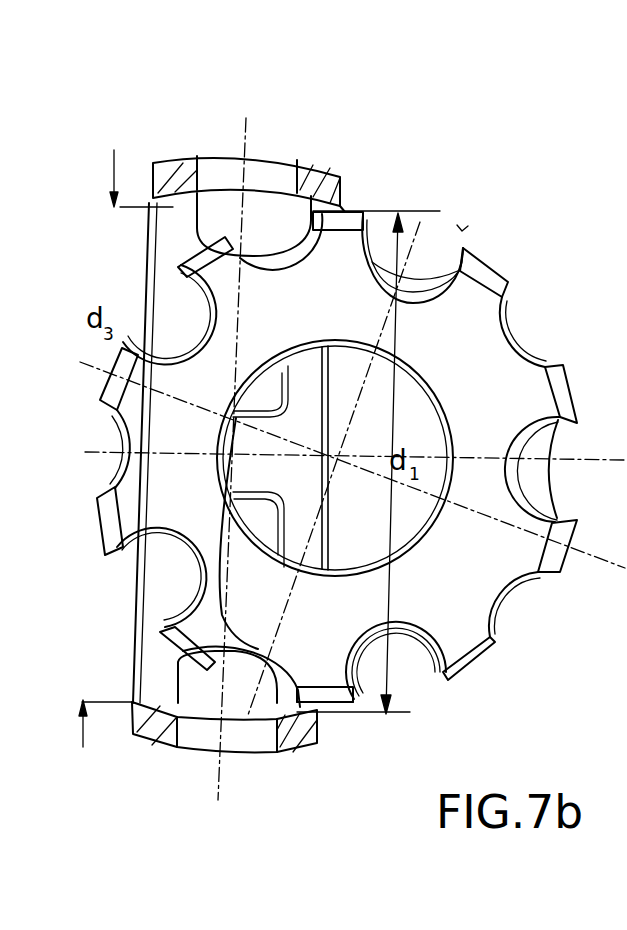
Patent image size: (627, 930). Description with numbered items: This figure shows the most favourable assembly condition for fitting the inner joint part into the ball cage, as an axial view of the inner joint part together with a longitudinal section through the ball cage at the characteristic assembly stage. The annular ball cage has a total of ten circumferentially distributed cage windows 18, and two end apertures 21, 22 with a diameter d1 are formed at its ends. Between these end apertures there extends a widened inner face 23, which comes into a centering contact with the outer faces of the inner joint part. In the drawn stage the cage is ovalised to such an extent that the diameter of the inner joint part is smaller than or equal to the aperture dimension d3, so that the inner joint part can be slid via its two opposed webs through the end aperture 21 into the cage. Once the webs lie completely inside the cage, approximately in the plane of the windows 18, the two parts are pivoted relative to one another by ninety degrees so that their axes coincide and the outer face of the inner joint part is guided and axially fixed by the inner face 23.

The cage windows 18 is at (220, 167).
The end aperture 21 is at (333, 532).
The end aperture 22 is at (135, 630).
The inner face 23 is at (152, 742).